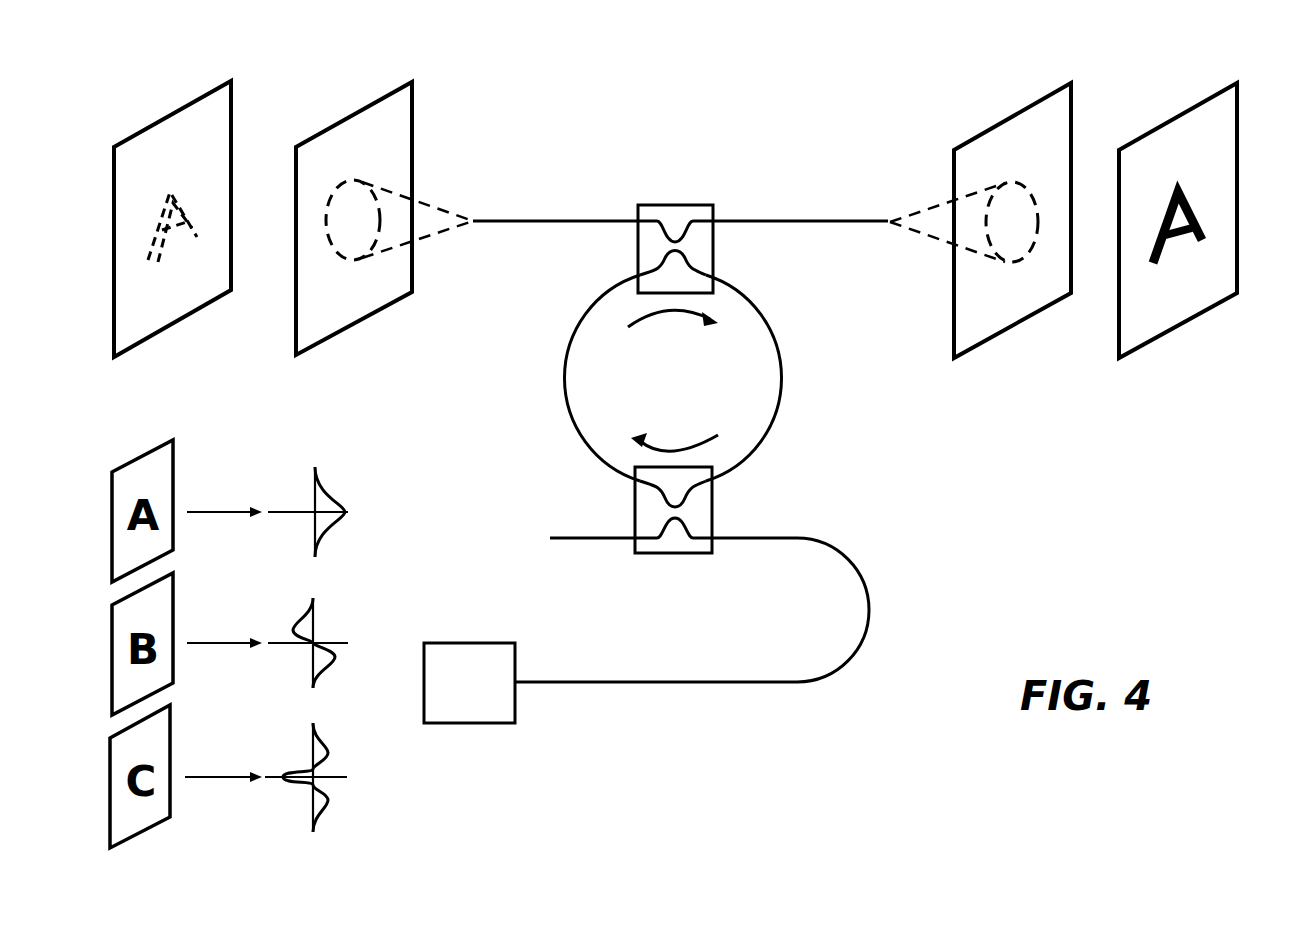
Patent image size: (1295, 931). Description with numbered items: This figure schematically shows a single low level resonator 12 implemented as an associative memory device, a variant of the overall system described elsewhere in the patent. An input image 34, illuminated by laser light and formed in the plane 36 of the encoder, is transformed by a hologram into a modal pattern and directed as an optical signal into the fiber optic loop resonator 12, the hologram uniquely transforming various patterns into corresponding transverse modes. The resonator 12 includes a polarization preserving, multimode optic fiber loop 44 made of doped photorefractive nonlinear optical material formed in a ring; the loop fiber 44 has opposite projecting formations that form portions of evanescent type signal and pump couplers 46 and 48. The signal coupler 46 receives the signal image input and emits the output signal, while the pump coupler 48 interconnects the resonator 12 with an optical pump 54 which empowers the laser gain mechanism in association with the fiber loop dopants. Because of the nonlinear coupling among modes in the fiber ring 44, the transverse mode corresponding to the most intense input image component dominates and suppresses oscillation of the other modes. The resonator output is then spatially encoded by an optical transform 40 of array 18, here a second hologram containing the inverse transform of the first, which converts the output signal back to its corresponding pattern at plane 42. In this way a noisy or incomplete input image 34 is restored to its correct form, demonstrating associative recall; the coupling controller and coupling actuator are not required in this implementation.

The low level resonator 12 is at (673, 379).
The array 18 is at (1201, 188).
The input image 34 is at (185, 203).
The plane of the encoder 36 is at (398, 125).
The optical transform 40 is at (1035, 128).
The plane 42 is at (1196, 125).
The optic fiber loop 44 is at (783, 348).
The signal coupler 46 is at (713, 250).
The pump coupler 48 is at (712, 508).
The optical pump 54 is at (462, 643).